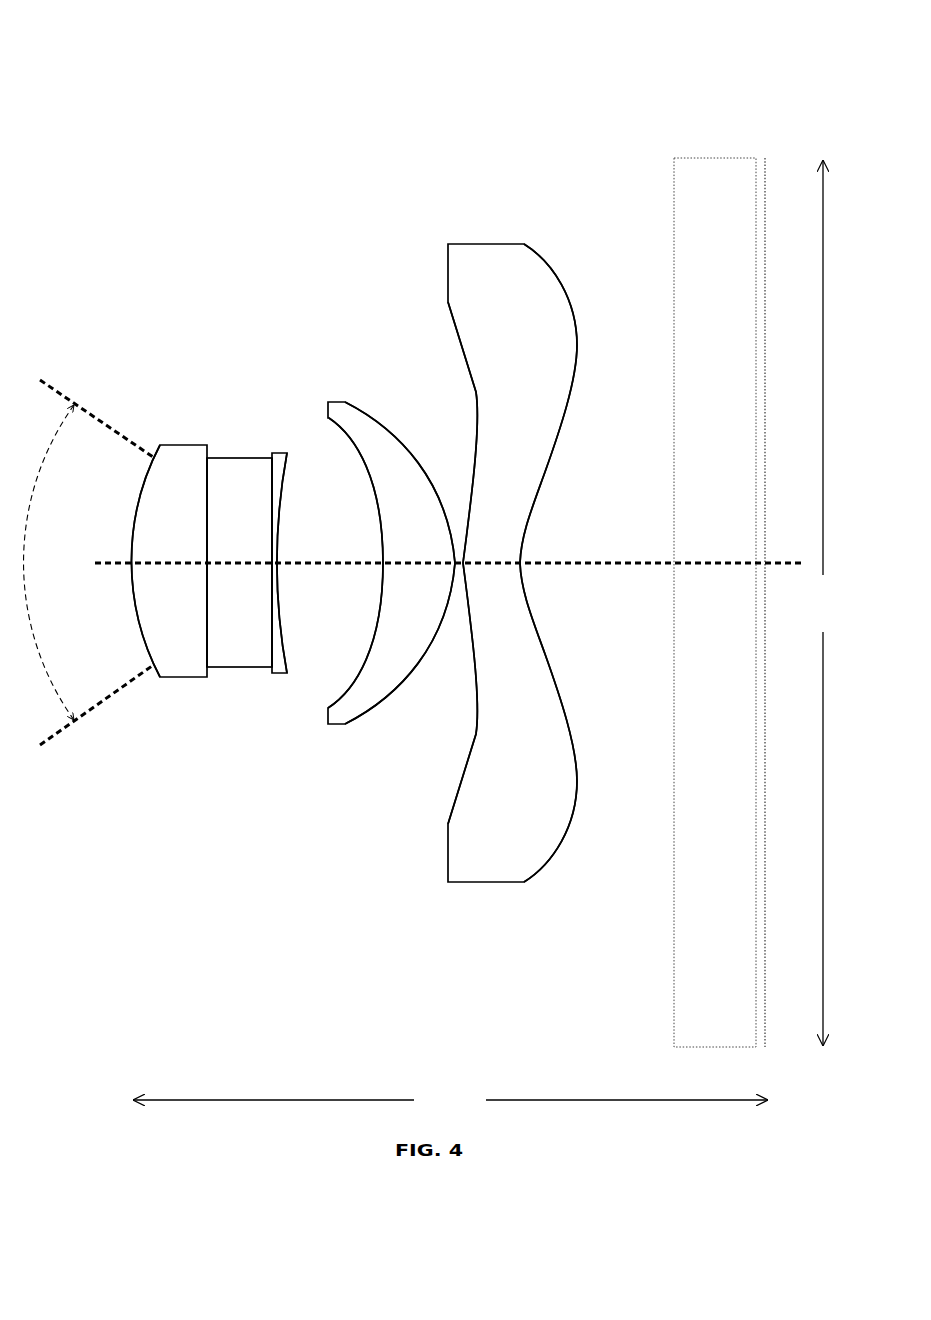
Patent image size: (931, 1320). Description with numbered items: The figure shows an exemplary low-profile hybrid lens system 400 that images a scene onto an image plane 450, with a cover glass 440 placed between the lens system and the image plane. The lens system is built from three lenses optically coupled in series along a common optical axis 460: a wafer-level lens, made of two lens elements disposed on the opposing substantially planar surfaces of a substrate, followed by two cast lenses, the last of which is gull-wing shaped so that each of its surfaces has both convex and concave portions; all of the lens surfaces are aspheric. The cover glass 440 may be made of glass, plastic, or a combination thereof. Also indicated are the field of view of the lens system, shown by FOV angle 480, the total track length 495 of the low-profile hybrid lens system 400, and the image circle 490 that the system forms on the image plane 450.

The low-profile hybrid lens system 400 is at (262, 95).
The cover glass 440 is at (717, 158).
The image plane 450 is at (766, 190).
The optical axis 460 is at (584, 566).
The FOV angle 480 is at (50, 441).
The image circle 490 is at (823, 603).
The total track length 495 is at (450, 1100).